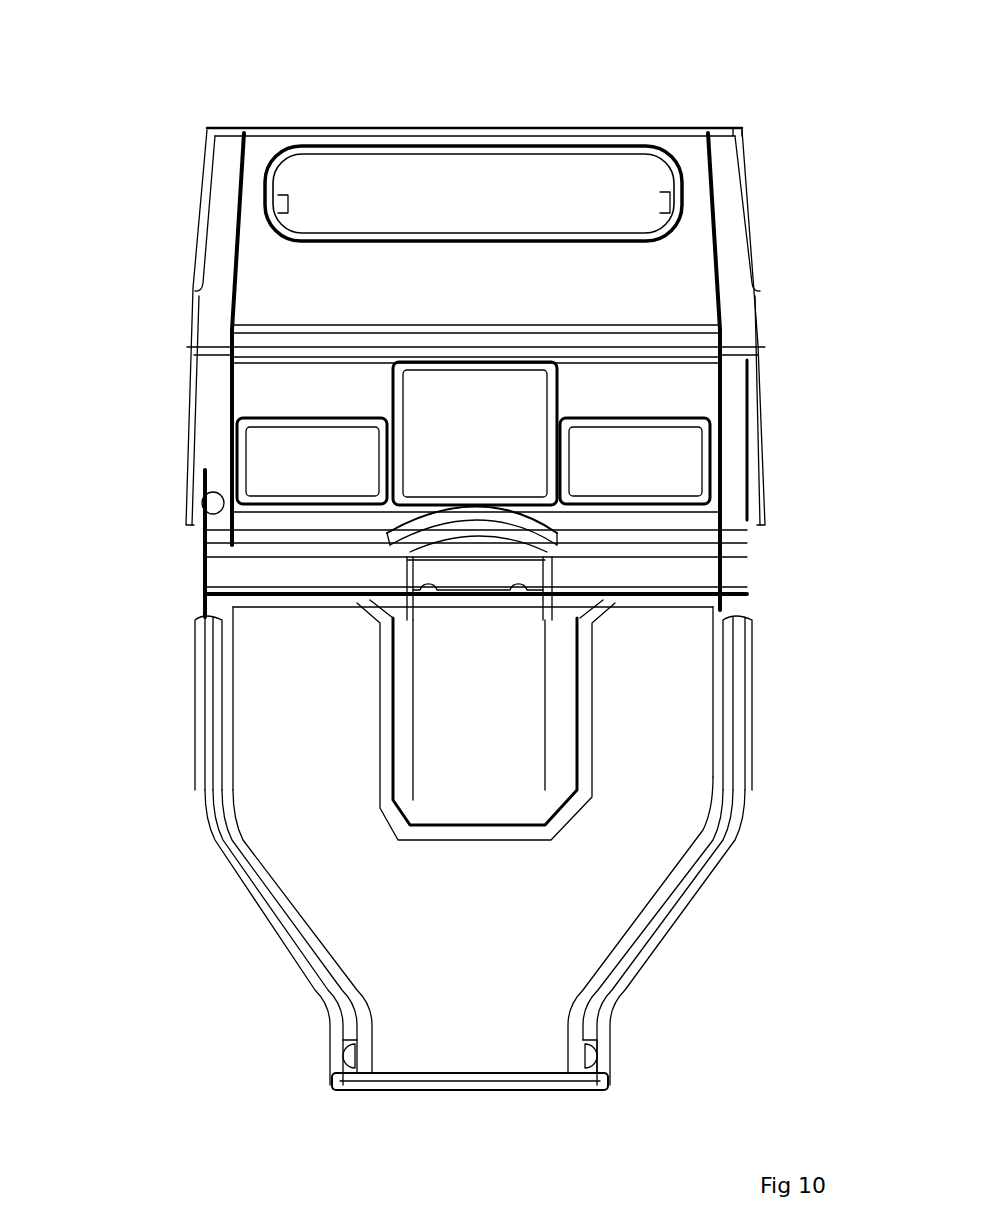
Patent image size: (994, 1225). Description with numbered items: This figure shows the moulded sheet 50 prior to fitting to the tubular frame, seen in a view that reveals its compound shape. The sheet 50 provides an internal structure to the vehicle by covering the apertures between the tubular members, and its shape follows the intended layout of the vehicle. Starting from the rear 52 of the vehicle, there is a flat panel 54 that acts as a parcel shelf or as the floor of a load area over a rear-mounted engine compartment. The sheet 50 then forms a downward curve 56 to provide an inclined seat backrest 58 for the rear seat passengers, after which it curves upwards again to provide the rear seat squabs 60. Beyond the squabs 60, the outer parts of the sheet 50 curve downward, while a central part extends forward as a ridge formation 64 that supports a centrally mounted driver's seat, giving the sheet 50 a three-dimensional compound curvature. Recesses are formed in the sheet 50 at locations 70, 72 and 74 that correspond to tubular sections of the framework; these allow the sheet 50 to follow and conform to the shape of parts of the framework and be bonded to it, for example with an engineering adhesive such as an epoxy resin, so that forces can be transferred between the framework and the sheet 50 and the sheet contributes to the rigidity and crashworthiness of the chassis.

The sheet 50 is at (192, 190).
The rear 52 is at (430, 130).
The flat panel 54 is at (470, 285).
The downward curve 56 is at (648, 320).
The inclined seat backrest 58 is at (668, 372).
The rear seat squabs 60 is at (648, 460).
The ridge formation 64 is at (474, 677).
The recess location 70 is at (738, 800).
The recess location 72 is at (585, 1058).
The recess location 74 is at (365, 1018).